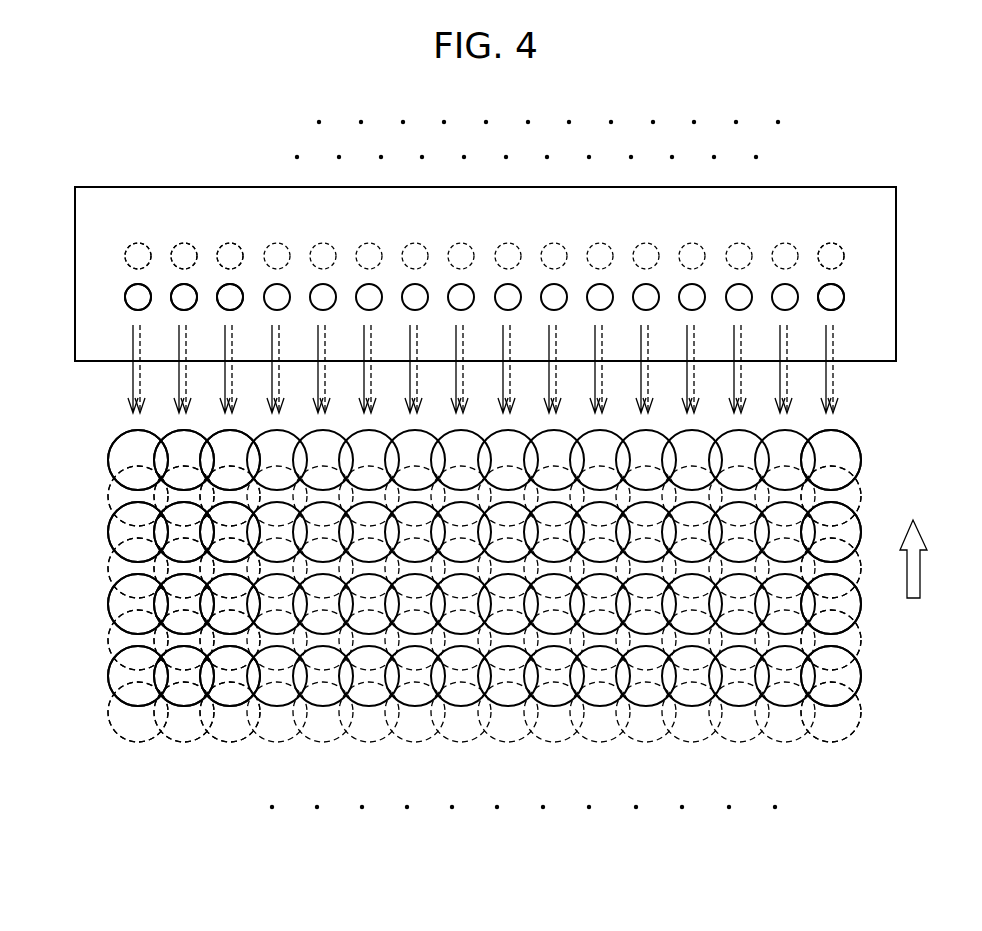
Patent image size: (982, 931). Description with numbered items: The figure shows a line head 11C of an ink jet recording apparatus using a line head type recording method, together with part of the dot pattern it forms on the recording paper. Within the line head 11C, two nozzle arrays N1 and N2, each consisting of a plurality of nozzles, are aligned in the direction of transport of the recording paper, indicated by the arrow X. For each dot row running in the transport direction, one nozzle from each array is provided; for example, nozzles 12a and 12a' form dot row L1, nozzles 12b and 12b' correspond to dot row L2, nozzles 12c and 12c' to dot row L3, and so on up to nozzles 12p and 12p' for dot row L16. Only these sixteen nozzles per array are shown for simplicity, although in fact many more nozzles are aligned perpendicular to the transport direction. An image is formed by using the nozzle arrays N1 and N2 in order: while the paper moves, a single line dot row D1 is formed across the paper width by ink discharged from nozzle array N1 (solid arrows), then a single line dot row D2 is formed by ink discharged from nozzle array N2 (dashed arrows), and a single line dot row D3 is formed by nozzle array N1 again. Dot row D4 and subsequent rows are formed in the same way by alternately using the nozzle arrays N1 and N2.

The line head 11C is at (878, 321).
The nozzle 12a is at (112, 228).
The nozzle 12b is at (174, 228).
The nozzle 12c is at (238, 228).
The nozzle 12p is at (812, 230).
The nozzle 12a' is at (137, 189).
The nozzle 12b' is at (205, 189).
The nozzle 12c' is at (258, 189).
The nozzle 12p' is at (837, 189).
The nozzle array N1 is at (91, 302).
The nozzle array N2 is at (91, 261).
The dot row D1 is at (91, 465).
The dot row D2 is at (91, 501).
The dot row D3 is at (91, 537).
The dot row D4 is at (91, 573).
The dot row L1 is at (142, 769).
The dot row L2 is at (188, 769).
The dot row L3 is at (234, 769).
The dot row L16 is at (832, 769).
The direction of transport of the recording paper X is at (913, 545).